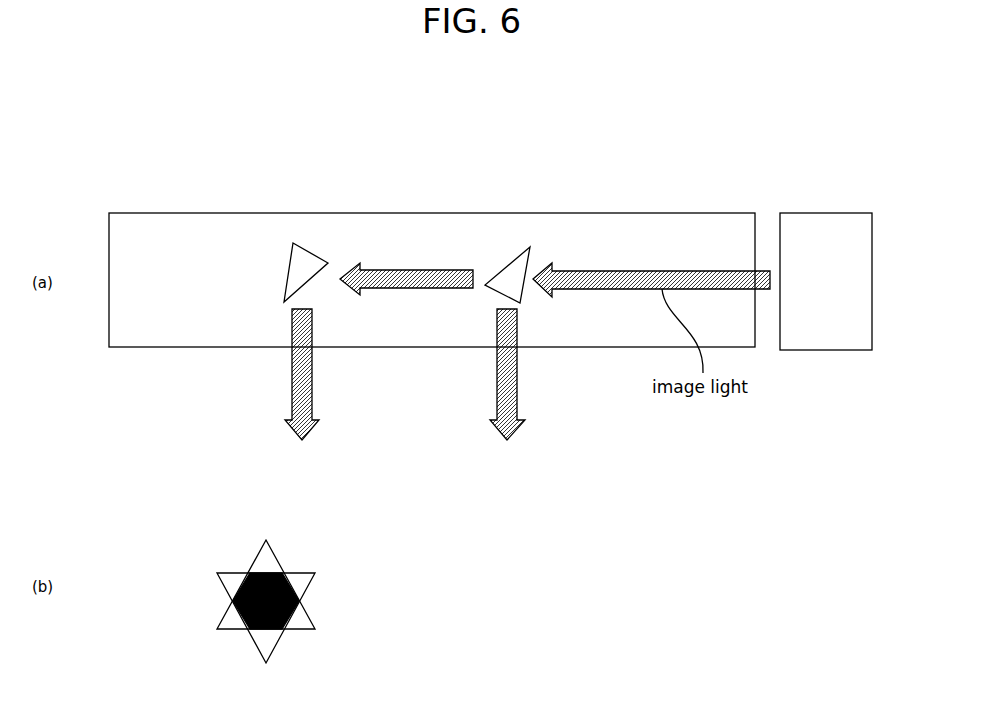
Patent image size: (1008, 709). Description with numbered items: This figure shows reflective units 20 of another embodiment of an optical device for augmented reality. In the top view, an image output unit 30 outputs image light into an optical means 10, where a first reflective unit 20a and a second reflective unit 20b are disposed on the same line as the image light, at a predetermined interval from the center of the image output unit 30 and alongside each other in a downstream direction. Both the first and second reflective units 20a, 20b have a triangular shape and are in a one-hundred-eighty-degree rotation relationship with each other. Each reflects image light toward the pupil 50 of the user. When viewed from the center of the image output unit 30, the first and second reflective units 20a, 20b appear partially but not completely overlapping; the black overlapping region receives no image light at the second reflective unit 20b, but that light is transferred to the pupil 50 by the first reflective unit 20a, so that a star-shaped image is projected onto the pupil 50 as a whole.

The optical means 10 is at (570, 213).
The reflective units 20 is at (280, 130).
The first reflective unit 20a is at (497, 254).
The second reflective unit 20b is at (280, 256).
The image output unit 30 is at (827, 213).
The pupil 50 is at (405, 396).